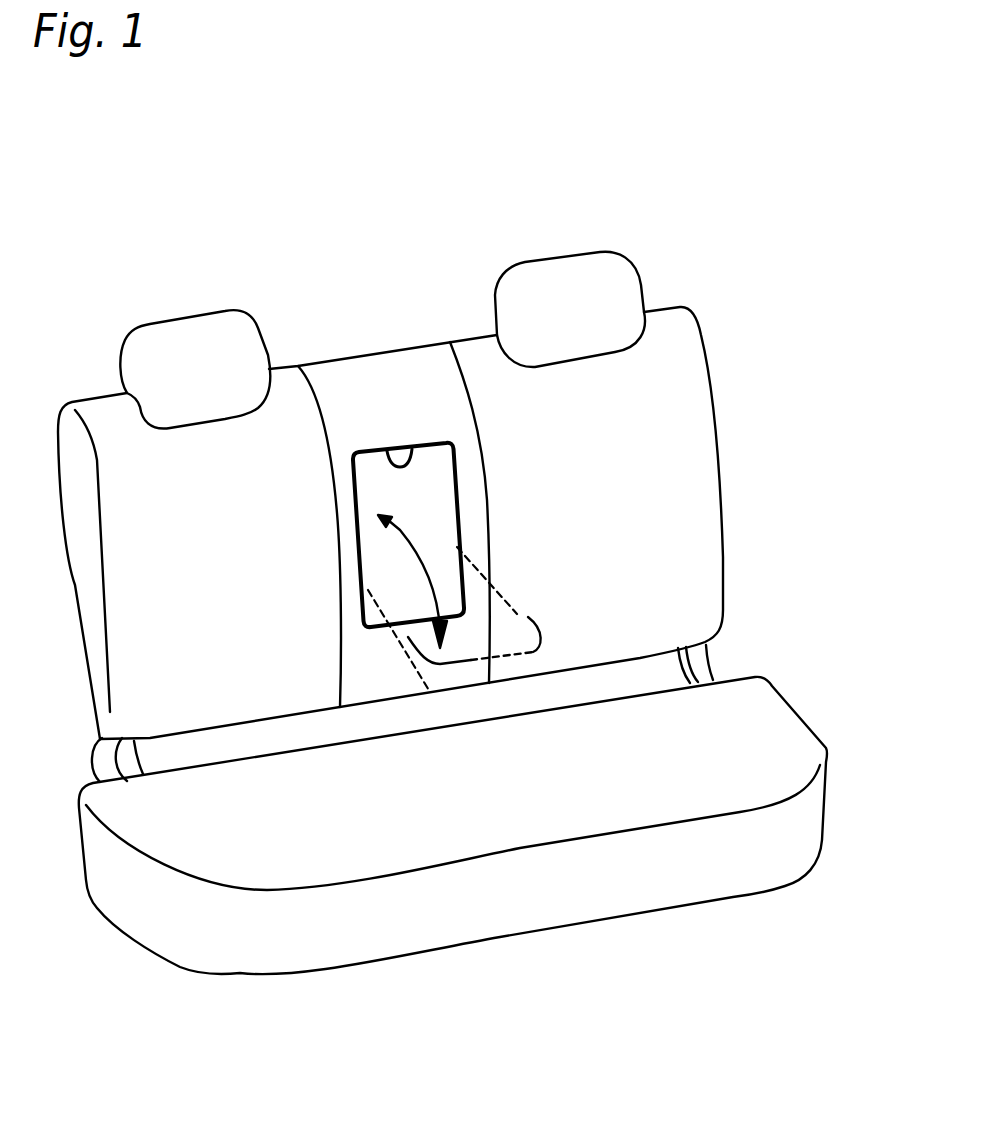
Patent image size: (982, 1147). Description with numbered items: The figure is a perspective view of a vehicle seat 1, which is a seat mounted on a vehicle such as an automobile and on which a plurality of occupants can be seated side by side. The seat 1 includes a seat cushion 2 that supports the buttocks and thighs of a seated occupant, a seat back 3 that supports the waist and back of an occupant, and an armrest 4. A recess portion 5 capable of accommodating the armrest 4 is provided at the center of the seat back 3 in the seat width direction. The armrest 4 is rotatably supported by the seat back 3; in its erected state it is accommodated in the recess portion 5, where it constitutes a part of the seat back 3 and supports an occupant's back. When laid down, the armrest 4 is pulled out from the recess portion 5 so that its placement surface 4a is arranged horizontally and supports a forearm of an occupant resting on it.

The vehicle seat 1 is at (110, 177).
The seat cushion 2 is at (798, 705).
The seat back 3 is at (712, 376).
The armrest 4 is at (460, 519).
The placement surface 4a is at (513, 623).
The recess portion 5 is at (417, 440).